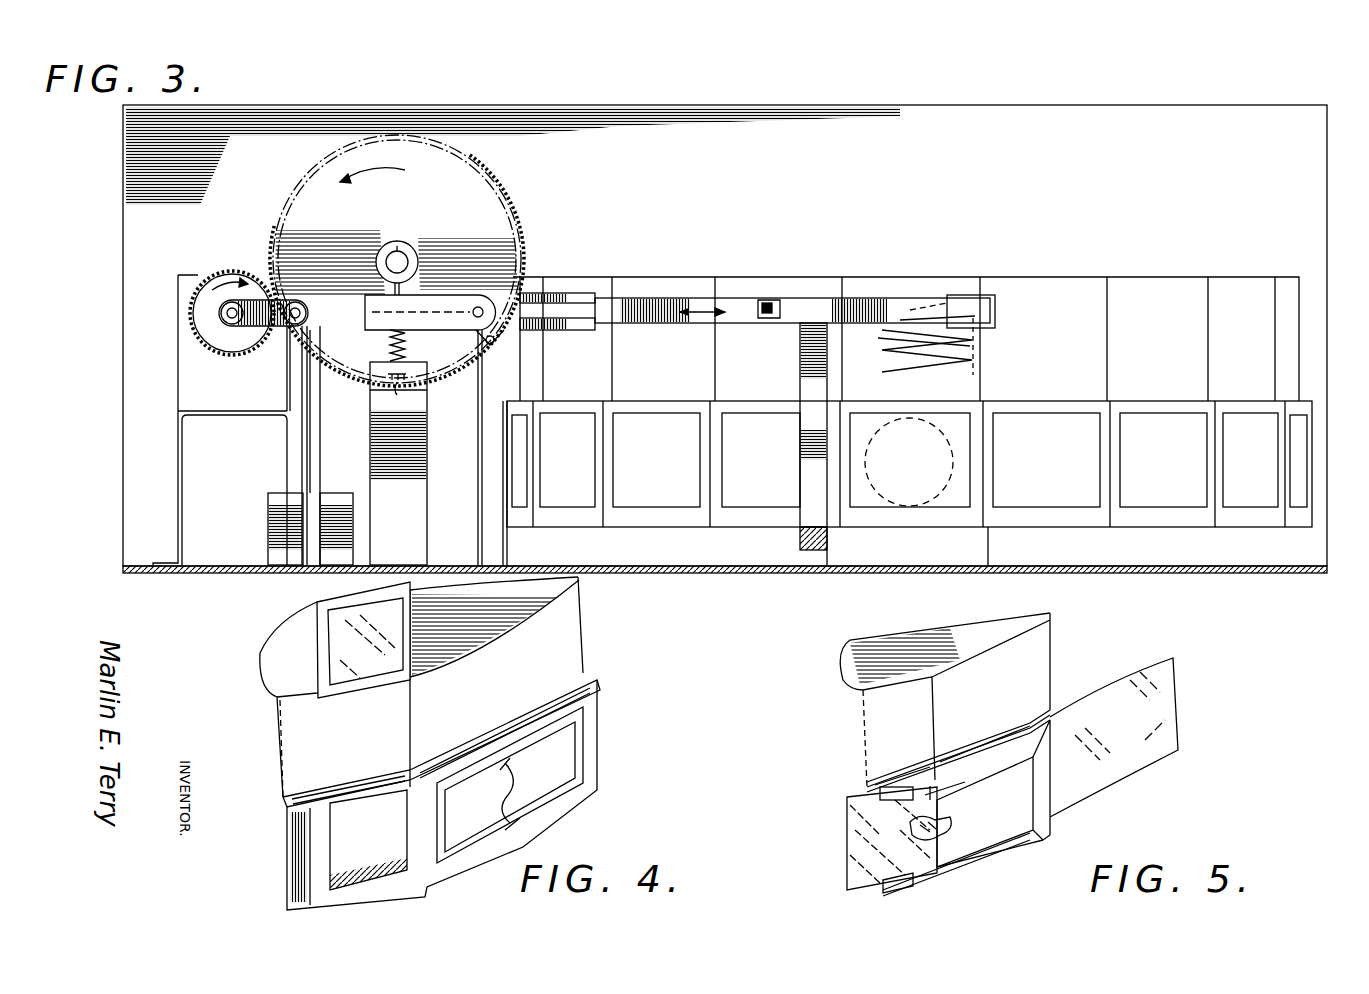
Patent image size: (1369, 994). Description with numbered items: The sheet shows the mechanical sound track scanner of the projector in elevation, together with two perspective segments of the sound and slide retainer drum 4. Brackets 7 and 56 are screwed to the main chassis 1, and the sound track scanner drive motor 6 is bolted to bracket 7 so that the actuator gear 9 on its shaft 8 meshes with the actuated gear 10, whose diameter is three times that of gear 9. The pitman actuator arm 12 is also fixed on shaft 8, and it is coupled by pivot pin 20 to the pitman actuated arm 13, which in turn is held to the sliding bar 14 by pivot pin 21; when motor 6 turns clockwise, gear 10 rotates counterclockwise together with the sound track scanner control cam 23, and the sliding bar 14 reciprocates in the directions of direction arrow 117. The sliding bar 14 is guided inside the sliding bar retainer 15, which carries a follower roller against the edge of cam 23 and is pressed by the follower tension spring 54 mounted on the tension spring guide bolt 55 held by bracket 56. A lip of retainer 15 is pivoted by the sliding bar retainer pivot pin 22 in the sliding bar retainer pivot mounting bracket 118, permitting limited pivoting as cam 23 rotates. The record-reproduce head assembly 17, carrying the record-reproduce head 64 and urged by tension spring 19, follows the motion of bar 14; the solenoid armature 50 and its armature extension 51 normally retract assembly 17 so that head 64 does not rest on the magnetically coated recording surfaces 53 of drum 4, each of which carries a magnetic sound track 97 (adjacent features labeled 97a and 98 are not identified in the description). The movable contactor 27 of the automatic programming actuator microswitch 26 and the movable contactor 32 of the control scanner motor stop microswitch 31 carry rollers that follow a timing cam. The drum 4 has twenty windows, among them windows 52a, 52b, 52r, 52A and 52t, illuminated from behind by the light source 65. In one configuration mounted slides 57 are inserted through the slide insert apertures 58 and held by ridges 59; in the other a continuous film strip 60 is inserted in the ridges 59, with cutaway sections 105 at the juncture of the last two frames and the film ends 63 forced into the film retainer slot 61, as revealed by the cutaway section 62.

In FIG. 3, the main chassis 1 is at (716, 106).
In FIG. 3, the sound and slide retainer drum 4 is at (1243, 280).
In FIG. 4, the sound and slide retainer drum 4 is at (580, 612).
In FIG. 5, the sound and slide retainer drum 4 is at (1055, 617).
In FIG. 3, the sound track scanner drive motor 6 is at (178, 342).
In FIG. 3, the bracket 7 is at (182, 472).
In FIG. 3, the shaft 8 is at (232, 318).
In FIG. 3, the actuator gear 9 is at (232, 272).
In FIG. 3, the actuated gear 10 is at (298, 190).
In FIG. 3, the pitman actuator arm 12 is at (250, 322).
In FIG. 3, the pitman actuated arm 13 is at (335, 297).
In FIG. 3, the sliding bar 14 is at (425, 300).
In FIG. 3, the sliding bar retainer 15 is at (555, 298).
In FIG. 3, the record-reproduce head assembly 17 is at (872, 300).
In FIG. 3, the record-reproduce head assembly tension spring 19 is at (760, 318).
In FIG. 3, the pivot pin 20 is at (300, 324).
In FIG. 3, the pivot pin 21 is at (479, 300).
In FIG. 3, the sliding bar retainer pivot pin 22 is at (486, 341).
In FIG. 3, the sound track scanner control cam 23 is at (392, 242).
In FIG. 3, the automatic programming actuator microswitch 26 is at (270, 530).
In FIG. 3, the movable contactor 27 is at (302, 455).
In FIG. 3, the control scanner motor stop microswitch 31 is at (352, 538).
In FIG. 3, the movable contactor 32 is at (322, 475).
In FIG. 3, the solenoid armature 50 is at (830, 545).
In FIG. 3, the armature extension 51 is at (803, 455).
In FIG. 3, the slide retention window 52r is at (690, 503).
In FIG. 3, the slide retention window 52A is at (740, 505).
In FIG. 3, the slide retention window 52t is at (945, 505).
In FIG. 4, the slide retention window 52t is at (365, 870).
In FIG. 5, the slide retention window 52t is at (1025, 832).
In FIG. 3, the slide retention window 52a is at (1060, 503).
In FIG. 3, the slide retention window 52b is at (1160, 503).
In FIG. 3, the magnetically coated recording surface 53 is at (660, 280).
In FIG. 4, the magnetically coated recording surface 53 is at (393, 718).
In FIG. 5, the magnetically coated recording surface 53 is at (1015, 660).
In FIG. 3, the follower tension spring 54 is at (390, 345).
In FIG. 3, the tension spring guide bolt 55 is at (427, 390).
In FIG. 3, the bracket 56 is at (372, 450).
In FIG. 4, the mounted slide 57 is at (345, 620).
In FIG. 4, the slide insert aperture 58 is at (383, 782).
In FIG. 4, the ridge 59 is at (575, 762).
In FIG. 5, the ridge 59 is at (1057, 712).
In FIG. 5, the continuous film strip 60 is at (1128, 765).
In FIG. 5, the film retainer slot 61 is at (950, 787).
In FIG. 5, the cutaway section 62 is at (955, 826).
In FIG. 5, the film ends 63 is at (912, 826).
In FIG. 3, the record-reproduce head 64 is at (995, 300).
In FIG. 3, the light source 65 is at (952, 462).
In FIG. 3, the magnetic sound track 97 is at (908, 370).
In FIG. 3, the spring end 97a is at (978, 318).
In FIG. 3, the spring 98 is at (976, 360).
In FIG. 5, the cutaway section 105 is at (913, 787).
In FIG. 3, the direction arrow 117 is at (703, 305).
In FIG. 3, the sliding bar retainer pivot mounting bracket 118 is at (505, 556).